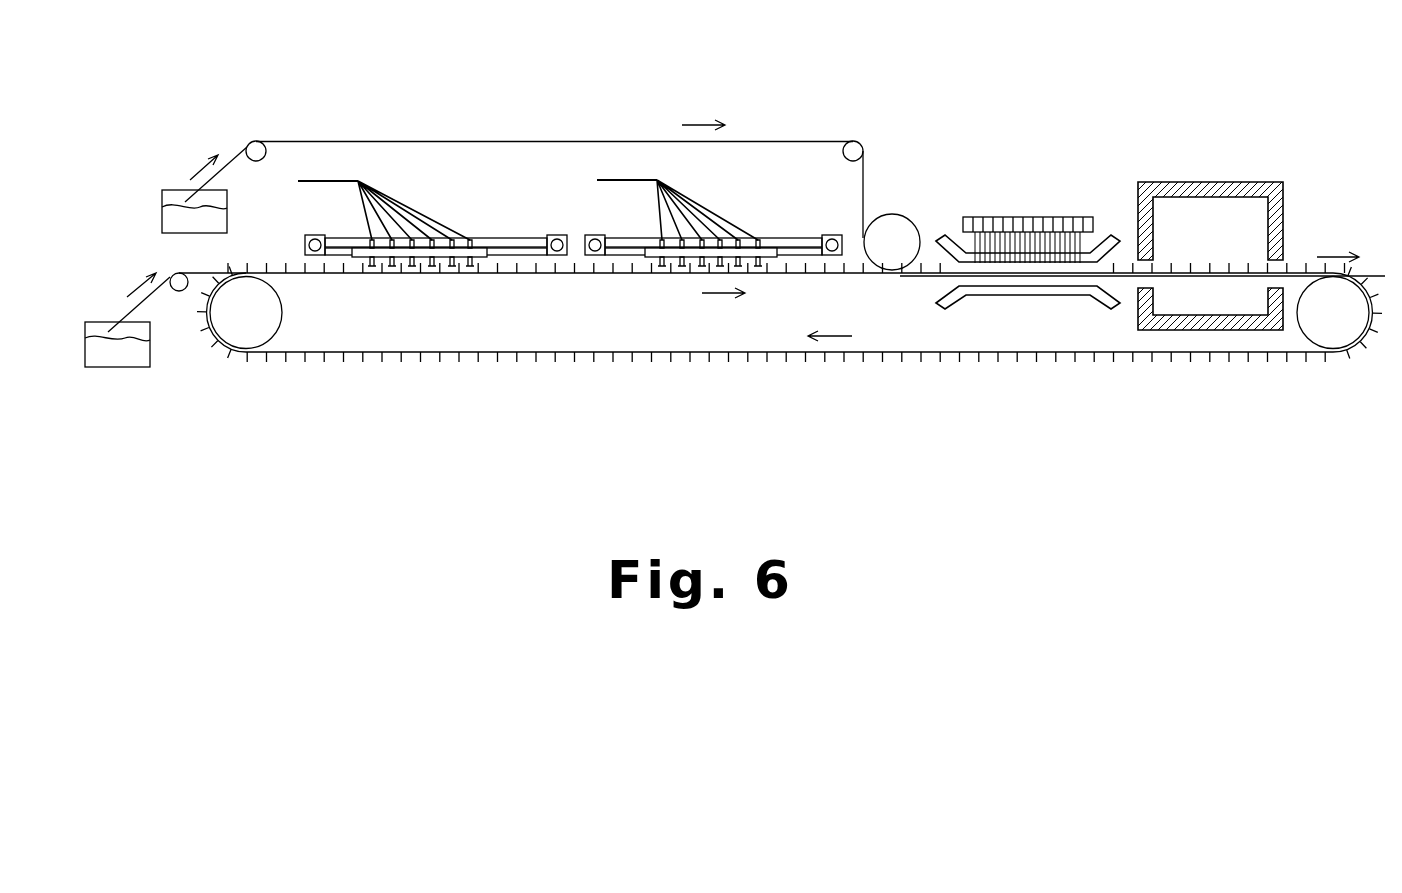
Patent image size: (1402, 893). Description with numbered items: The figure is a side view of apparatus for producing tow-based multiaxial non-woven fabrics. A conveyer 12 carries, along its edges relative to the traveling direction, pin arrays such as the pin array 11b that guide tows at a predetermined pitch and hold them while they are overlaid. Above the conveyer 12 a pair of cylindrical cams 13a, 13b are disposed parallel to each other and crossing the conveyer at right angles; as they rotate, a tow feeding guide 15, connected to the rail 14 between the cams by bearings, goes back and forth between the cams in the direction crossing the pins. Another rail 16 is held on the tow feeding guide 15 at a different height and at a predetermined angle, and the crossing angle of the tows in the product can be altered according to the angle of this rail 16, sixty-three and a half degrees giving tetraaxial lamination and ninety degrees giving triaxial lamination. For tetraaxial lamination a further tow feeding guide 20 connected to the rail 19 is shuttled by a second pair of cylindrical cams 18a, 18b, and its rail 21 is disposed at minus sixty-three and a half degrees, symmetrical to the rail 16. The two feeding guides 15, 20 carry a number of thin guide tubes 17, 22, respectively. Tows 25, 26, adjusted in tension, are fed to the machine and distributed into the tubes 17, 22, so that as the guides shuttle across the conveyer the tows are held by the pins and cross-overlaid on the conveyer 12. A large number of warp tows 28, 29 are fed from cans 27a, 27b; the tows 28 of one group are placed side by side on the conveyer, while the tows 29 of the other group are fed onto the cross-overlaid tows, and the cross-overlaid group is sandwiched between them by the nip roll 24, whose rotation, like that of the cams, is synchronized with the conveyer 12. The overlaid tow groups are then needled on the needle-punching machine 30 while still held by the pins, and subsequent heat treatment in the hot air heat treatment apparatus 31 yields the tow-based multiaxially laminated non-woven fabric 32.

The pin array 11b is at (293, 265).
The conveyer 12 is at (788, 357).
The cylindrical cam 13a is at (308, 238).
The cylindrical cam 13b is at (543, 238).
The rail 14 is at (503, 245).
The tow feeding guide 15 is at (360, 252).
The rail 16 is at (337, 238).
The guide tubes 17 is at (397, 270).
The cylindrical cam 18a is at (588, 235).
The cylindrical cam 18b is at (823, 238).
The rail 19 is at (628, 238).
The tow feeding guide 20 is at (650, 253).
The rail 21 is at (792, 242).
The guide tubes 22 is at (672, 265).
The nip roll 24 is at (898, 225).
The tows 25 is at (328, 181).
The tows 26 is at (632, 180).
The can 27a is at (162, 197).
The can 27b is at (107, 322).
The tows 28 is at (155, 293).
The tows 29 is at (423, 142).
The needle-punching machine 30 is at (1035, 220).
The hot air heat treatment apparatus 31 is at (1202, 210).
The tow-based multiaxially laminated non-woven fabric 32 is at (1377, 273).